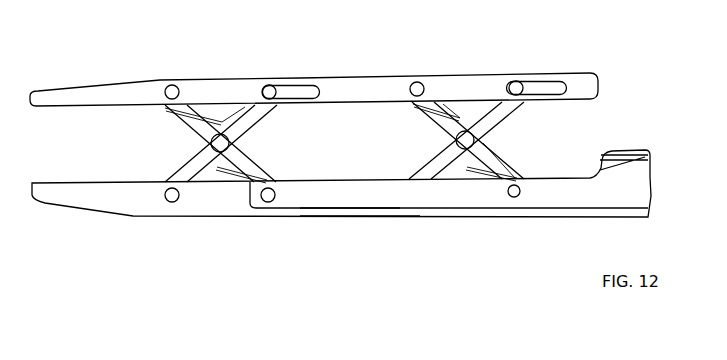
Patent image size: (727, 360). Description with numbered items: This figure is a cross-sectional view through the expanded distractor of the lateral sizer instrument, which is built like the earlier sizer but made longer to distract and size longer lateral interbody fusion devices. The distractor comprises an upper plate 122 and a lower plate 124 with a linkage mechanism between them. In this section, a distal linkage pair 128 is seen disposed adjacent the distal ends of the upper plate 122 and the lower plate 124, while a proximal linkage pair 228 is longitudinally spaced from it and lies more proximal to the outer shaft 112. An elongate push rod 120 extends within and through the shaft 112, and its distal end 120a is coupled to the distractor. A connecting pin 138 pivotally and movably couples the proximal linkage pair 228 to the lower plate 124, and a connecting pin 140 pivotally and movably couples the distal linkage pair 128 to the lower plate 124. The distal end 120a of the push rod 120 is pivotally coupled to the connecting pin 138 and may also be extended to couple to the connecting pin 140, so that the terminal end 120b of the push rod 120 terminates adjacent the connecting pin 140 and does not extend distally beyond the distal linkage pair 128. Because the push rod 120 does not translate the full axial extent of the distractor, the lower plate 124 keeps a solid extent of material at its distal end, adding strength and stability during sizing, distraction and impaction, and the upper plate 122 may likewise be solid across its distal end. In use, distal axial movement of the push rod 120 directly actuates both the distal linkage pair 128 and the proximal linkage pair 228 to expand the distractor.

The upper plate 122 is at (350, 75).
The push rod 120 is at (636, 190).
The outer shaft 112 is at (633, 148).
The terminal end 120b is at (247, 205).
The distal end 120a is at (338, 200).
The lower plate 124 is at (373, 219).
The connecting pin 140 is at (268, 202).
The connecting pin 138 is at (516, 198).
The distal linkage pair 128 is at (217, 183).
The proximal linkage pair 228 is at (467, 172).